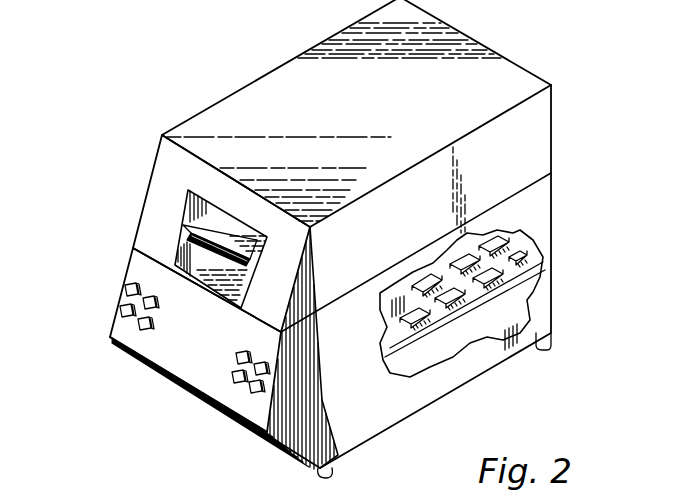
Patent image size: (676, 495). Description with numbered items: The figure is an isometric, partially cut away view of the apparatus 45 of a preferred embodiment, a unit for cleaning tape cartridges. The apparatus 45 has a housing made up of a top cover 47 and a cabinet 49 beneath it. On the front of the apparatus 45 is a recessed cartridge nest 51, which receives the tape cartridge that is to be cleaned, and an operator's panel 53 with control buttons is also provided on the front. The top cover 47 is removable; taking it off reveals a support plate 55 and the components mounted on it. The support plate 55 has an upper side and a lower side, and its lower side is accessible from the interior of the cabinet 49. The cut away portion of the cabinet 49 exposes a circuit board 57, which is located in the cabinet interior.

The apparatus 45 is at (174, 93).
The top cover 47 is at (526, 72).
The cabinet 49 is at (552, 198).
The recessed cartridge nest 51 is at (201, 260).
The operator's panel 53 is at (122, 306).
The support plate 55 is at (182, 274).
The circuit board 57 is at (475, 292).